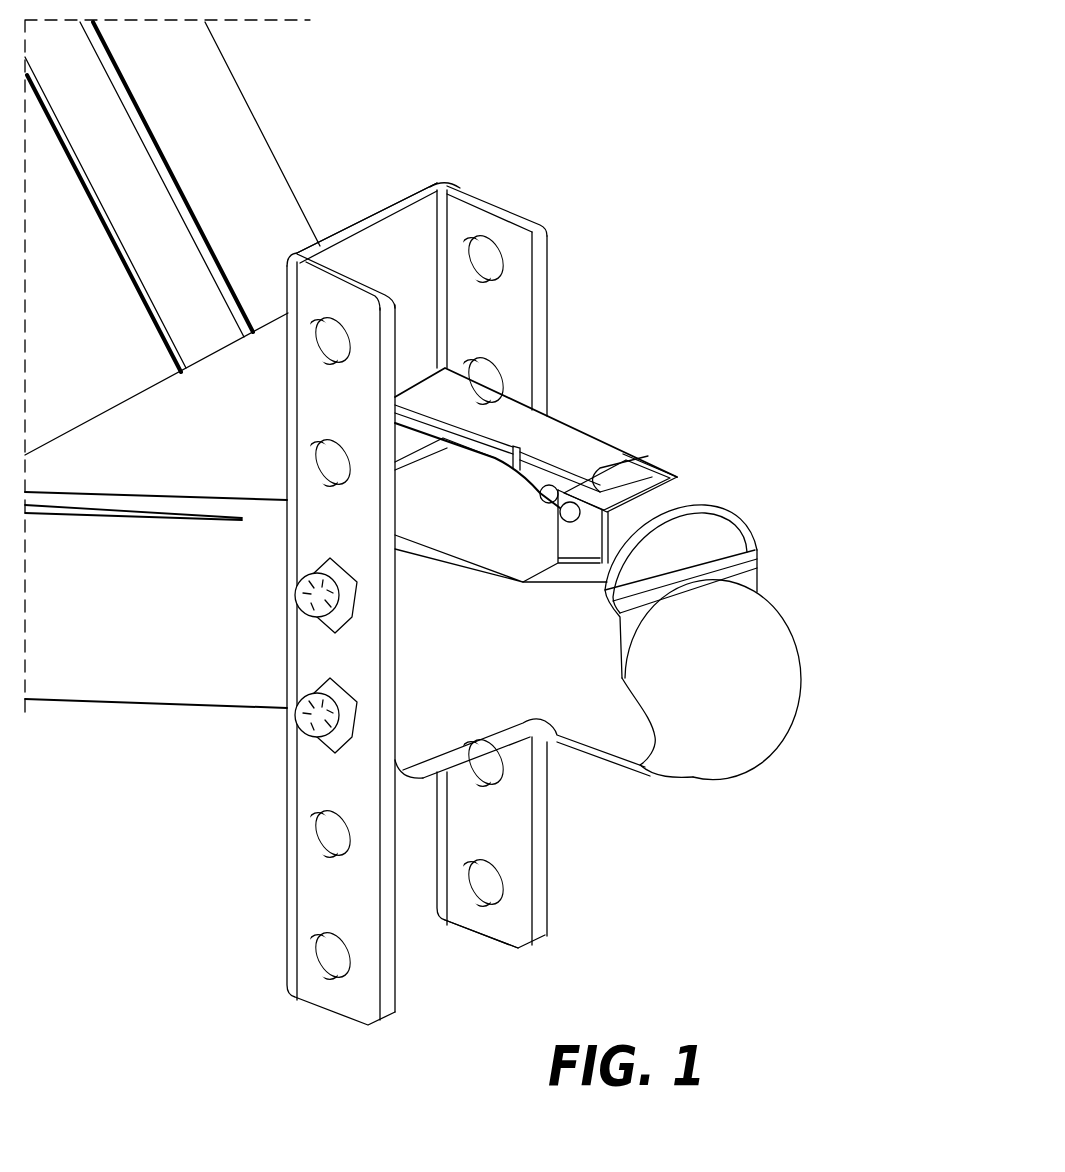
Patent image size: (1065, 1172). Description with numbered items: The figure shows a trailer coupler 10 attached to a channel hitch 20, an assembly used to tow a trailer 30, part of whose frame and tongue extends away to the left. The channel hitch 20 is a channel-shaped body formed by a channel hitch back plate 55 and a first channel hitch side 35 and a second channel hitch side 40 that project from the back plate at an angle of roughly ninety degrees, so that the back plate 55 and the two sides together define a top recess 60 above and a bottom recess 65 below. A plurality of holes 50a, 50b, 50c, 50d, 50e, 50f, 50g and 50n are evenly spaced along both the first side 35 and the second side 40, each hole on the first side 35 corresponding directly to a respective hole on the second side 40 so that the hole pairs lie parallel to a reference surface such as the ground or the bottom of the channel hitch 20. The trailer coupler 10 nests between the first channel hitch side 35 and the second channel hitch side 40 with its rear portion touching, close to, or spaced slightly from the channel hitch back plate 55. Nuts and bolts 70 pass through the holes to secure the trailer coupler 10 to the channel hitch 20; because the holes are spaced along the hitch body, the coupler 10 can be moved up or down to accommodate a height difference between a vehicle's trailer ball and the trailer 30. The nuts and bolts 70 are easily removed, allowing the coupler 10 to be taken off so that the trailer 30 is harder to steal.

The trailer coupler 10 is at (742, 648).
The channel hitch 20 is at (520, 240).
The trailer 30 is at (240, 84).
The first channel hitch side 35 is at (348, 1000).
The second channel hitch side 40 is at (560, 880).
The hole 50a is at (320, 358).
The hole 50b is at (320, 480).
The hole 50c is at (320, 850).
The hole 50d is at (320, 972).
The hole 50e is at (475, 278).
The hole 50f is at (500, 375).
The hole 50g is at (478, 778).
The hole 50n is at (447, 935).
The channel hitch back plate 55 is at (410, 266).
The top recess 60 is at (406, 228).
The bottom recess 65 is at (448, 968).
The nuts and bolts 70 is at (300, 738).